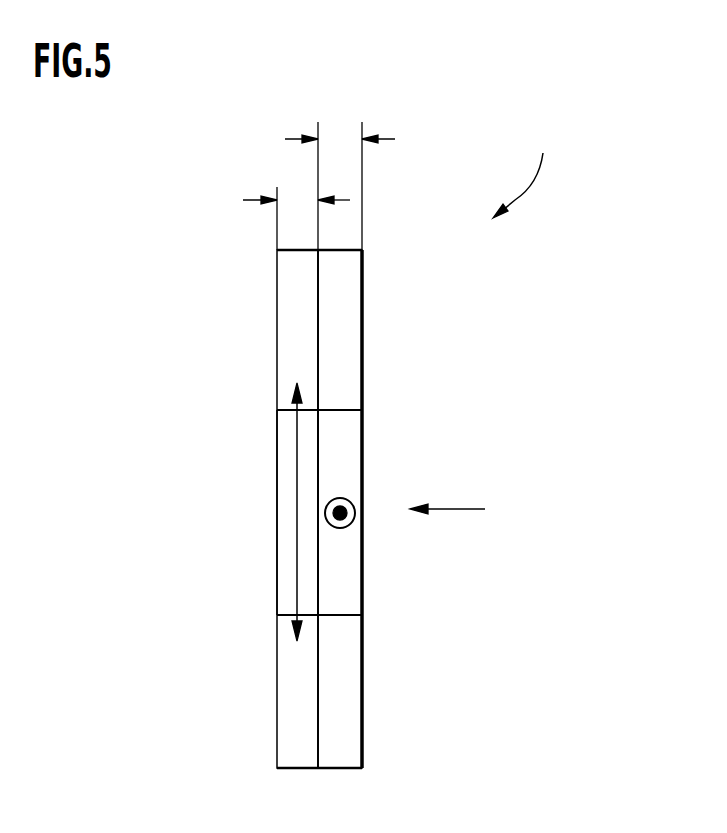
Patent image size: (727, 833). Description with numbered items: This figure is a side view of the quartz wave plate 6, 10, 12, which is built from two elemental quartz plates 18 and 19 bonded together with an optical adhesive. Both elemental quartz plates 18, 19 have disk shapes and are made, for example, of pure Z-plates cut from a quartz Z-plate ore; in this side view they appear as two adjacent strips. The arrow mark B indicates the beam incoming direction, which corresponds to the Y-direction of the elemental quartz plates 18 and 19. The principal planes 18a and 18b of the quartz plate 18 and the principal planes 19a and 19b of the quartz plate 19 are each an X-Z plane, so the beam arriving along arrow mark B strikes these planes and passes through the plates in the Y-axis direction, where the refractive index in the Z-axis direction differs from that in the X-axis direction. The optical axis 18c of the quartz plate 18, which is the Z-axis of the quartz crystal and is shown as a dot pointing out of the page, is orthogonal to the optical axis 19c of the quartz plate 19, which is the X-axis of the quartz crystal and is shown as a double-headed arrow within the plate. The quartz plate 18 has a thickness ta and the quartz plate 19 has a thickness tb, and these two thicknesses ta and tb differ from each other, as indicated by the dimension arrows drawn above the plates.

The quartz wave plate 6 is at (547, 165).
The quartz wave plate 10 is at (547, 165).
The quartz wave plate 12 is at (547, 165).
The elemental quartz plate 18 is at (347, 315).
The principal plane 18a is at (363, 412).
The principal plane 18b is at (318, 353).
The optical axis 18c is at (340, 528).
The elemental quartz plate 19 is at (287, 323).
The principal plane 19a is at (277, 473).
The principal plane 19b is at (320, 375).
The optical axis 19c is at (297, 547).
The thickness ta is at (340, 173).
The thickness tb is at (296, 205).
The arrow mark B is at (459, 511).